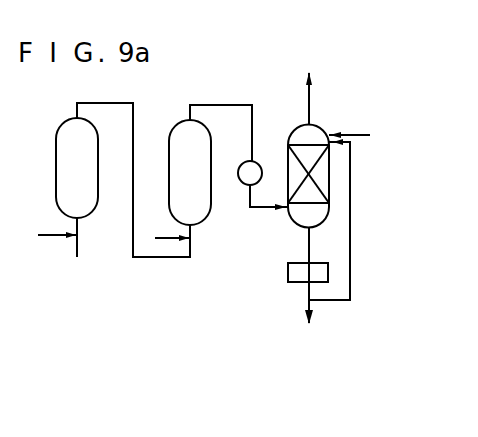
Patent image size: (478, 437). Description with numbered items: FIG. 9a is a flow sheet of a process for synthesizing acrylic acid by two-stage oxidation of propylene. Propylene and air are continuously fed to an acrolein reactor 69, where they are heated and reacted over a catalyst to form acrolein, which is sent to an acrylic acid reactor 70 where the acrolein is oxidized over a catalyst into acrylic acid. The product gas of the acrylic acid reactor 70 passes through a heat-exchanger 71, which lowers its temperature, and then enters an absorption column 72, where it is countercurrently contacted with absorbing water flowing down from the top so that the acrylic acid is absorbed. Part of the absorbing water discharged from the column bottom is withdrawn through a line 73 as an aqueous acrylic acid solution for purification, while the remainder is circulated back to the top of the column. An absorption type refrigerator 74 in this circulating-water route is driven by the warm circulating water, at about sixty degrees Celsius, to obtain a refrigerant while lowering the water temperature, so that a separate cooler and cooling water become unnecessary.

The acrolein reactor 69 is at (68, 130).
The acrylic acid reactor 70 is at (181, 135).
The heat-exchanger 71 is at (245, 166).
The absorption column 72 is at (298, 136).
The line 73 is at (306, 311).
The absorption type refrigerator 74 is at (300, 266).